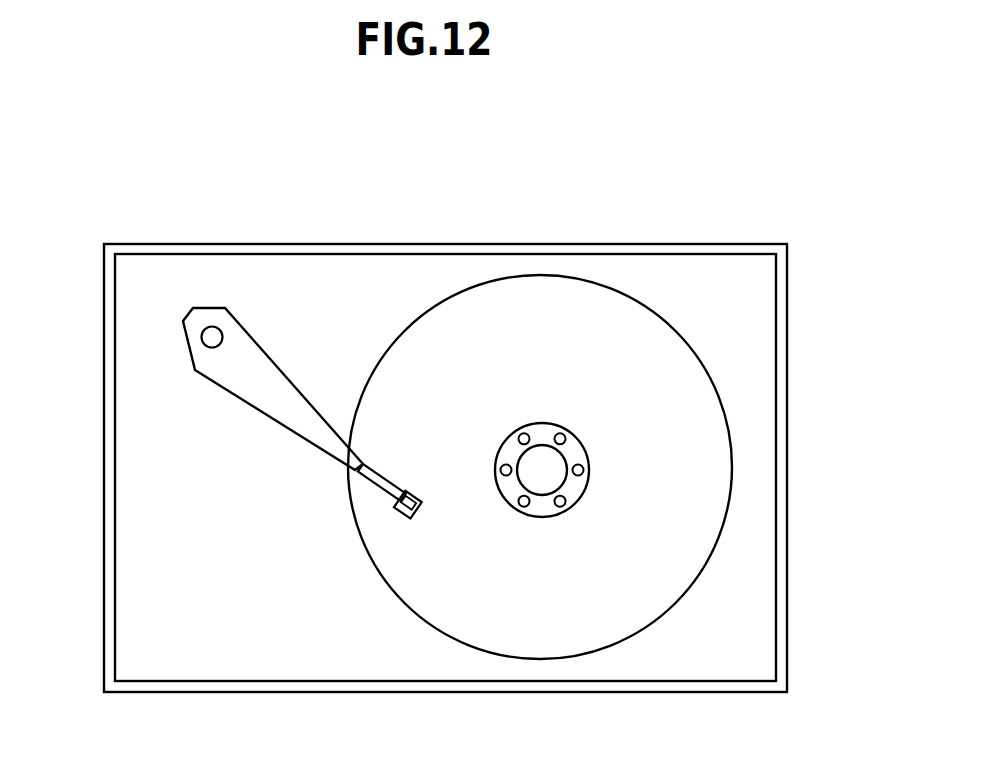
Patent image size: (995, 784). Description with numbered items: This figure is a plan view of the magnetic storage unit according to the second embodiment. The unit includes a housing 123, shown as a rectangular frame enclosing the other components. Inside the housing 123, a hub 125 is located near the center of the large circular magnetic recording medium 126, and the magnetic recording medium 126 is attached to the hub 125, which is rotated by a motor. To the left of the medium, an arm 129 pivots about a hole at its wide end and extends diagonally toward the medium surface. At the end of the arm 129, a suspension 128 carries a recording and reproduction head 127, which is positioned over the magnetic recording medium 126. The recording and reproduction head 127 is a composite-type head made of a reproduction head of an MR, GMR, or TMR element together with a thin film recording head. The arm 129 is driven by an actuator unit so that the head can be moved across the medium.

The housing 123 is at (778, 667).
The hub 125 is at (577, 453).
The magnetic recording medium 126 is at (601, 313).
The recording and reproduction head 127 is at (413, 497).
The suspension 128 is at (368, 466).
The arm 129 is at (252, 408).